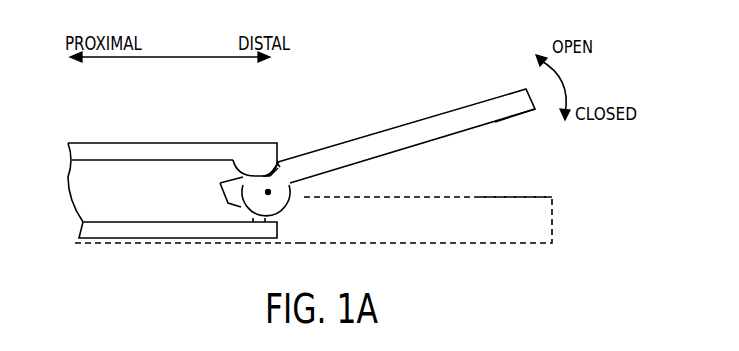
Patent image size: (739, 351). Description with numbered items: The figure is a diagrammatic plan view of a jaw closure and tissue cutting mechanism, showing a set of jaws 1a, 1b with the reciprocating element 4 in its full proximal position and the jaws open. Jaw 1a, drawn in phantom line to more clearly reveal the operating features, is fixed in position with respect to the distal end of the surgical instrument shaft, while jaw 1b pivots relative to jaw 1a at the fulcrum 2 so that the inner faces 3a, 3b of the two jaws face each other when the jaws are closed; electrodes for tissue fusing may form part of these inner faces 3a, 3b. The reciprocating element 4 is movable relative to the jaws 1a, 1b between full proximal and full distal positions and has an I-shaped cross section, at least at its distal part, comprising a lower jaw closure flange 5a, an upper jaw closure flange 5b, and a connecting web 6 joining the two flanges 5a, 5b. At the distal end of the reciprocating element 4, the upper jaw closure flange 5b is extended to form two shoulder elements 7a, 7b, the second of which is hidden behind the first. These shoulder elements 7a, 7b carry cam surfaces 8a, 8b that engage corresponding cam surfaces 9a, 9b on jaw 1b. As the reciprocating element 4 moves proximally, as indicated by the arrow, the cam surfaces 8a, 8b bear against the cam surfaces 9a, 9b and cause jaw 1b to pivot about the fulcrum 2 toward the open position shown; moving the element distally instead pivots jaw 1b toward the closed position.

The jaw 1a is at (502, 243).
The jaw 1b is at (500, 97).
The fulcrum 2 is at (268, 192).
The inner face 3a is at (500, 197).
The inner face 3b is at (495, 123).
The reciprocating element 4 is at (137, 249).
The lower jaw closure flange 5a is at (105, 233).
The upper jaw closure flange 5b is at (88, 152).
The connecting web 6 is at (160, 198).
The shoulder element 7a is at (248, 164).
The shoulder element 7b is at (296, 137).
The cam surface 8a is at (240, 182).
The cam surface 8b is at (301, 125).
The cam surface 9a is at (270, 167).
The cam surface 9b is at (315, 125).